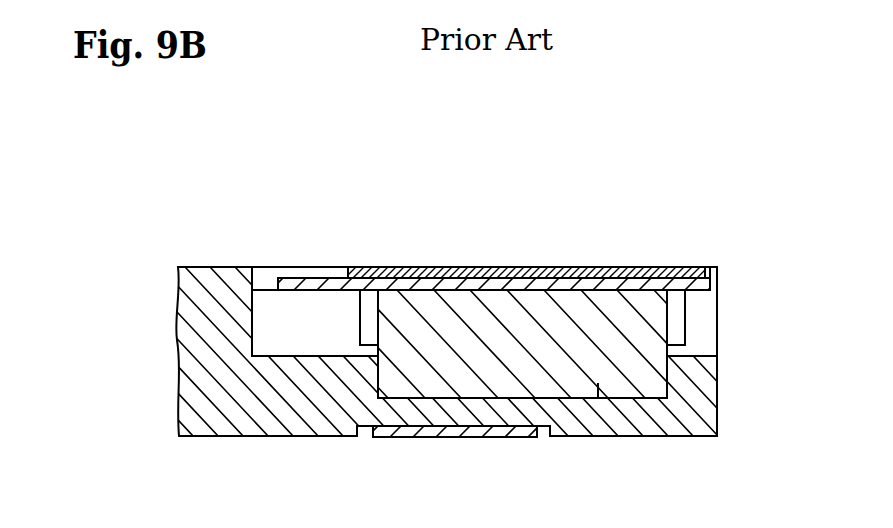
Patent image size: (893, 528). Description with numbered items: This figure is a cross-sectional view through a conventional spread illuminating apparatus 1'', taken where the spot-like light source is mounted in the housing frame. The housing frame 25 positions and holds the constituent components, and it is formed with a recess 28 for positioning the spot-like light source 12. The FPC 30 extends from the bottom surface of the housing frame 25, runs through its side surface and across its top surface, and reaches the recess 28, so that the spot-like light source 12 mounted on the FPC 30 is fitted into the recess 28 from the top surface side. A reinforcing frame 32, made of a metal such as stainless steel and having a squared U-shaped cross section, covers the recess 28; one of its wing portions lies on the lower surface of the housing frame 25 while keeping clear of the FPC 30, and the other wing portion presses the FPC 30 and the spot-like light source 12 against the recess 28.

The spread illuminating apparatus 1'' is at (447, 275).
The housing frame 25 is at (217, 267).
The spot-like light source 12 is at (477, 327).
The reinforcing frame 32 is at (627, 267).
The FPC 30 is at (325, 284).
The recess 28 is at (598, 397).